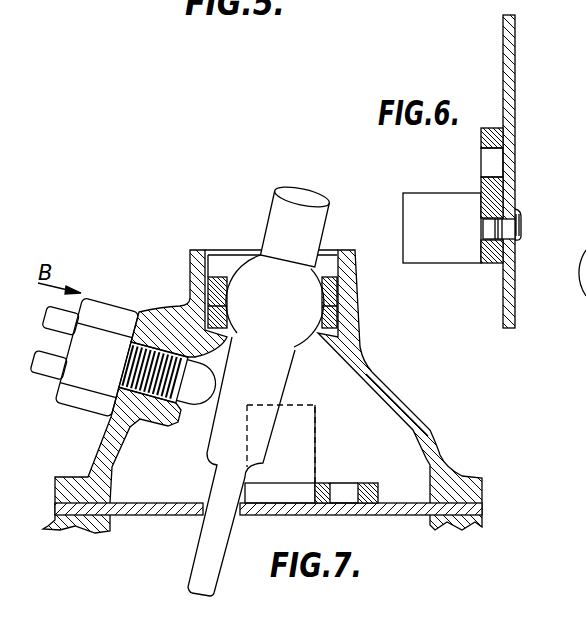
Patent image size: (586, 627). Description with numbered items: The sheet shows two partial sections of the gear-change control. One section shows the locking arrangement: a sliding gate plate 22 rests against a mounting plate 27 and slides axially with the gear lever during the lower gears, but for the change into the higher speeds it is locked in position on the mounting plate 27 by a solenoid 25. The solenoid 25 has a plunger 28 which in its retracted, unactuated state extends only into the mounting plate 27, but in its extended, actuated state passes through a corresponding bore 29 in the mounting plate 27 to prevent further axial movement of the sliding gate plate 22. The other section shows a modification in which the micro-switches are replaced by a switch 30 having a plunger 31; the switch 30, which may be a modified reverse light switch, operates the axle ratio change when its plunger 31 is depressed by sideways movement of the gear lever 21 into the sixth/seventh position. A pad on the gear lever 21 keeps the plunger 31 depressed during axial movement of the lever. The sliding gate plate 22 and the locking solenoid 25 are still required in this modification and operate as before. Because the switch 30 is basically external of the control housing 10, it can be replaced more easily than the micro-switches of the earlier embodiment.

In FIG. 7, the control housing 10 is at (402, 407).
In FIG. 7, the gear lever 21 is at (270, 369).
In FIG. 6, the sliding gate plate 22 is at (488, 132).
In FIG. 7, the sliding gate plate 22 is at (371, 483).
In FIG. 6, the solenoid 25 is at (430, 200).
In FIG. 7, the solenoid 25 is at (297, 433).
In FIG. 6, the mounting plate 27 is at (509, 64).
In FIG. 6, the plunger 28 is at (483, 230).
In FIG. 6, the bore 29 is at (511, 214).
In FIG. 7, the switch 30 is at (118, 314).
In FIG. 7, the plunger 31 is at (208, 400).